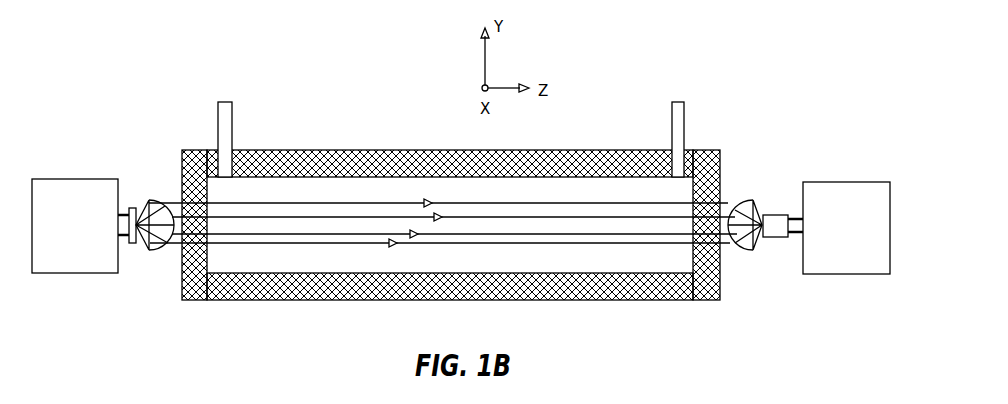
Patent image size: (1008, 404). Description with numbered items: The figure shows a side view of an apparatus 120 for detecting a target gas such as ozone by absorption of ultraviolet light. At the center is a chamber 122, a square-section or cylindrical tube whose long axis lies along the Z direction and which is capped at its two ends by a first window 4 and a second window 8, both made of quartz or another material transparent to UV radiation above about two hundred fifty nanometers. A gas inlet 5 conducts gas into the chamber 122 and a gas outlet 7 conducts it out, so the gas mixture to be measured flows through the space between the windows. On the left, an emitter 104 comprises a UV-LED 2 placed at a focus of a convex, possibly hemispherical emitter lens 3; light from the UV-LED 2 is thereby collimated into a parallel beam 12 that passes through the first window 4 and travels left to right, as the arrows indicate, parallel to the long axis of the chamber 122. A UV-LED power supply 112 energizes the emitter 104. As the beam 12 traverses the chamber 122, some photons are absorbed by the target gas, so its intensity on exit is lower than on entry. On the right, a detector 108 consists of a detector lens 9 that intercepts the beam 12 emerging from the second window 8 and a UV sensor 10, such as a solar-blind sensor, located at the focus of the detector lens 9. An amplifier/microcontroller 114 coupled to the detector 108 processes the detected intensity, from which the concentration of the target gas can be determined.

The UV-LED 2 is at (133, 205).
The emitter lens 3 is at (168, 200).
The first window 4 is at (195, 150).
The gas inlet 5 is at (232, 117).
The gas outlet 7 is at (672, 118).
The second window 8 is at (712, 150).
The detector lens 9 is at (728, 205).
The UV sensor 10 is at (782, 215).
The beam 12 is at (360, 240).
The emitter 104 is at (165, 67).
The detector 108 is at (788, 127).
The UV-LED power supply 112 is at (63, 179).
The amplifier/microcontroller 114 is at (850, 182).
The apparatus 120 is at (297, 48).
The chamber 122 is at (326, 150).